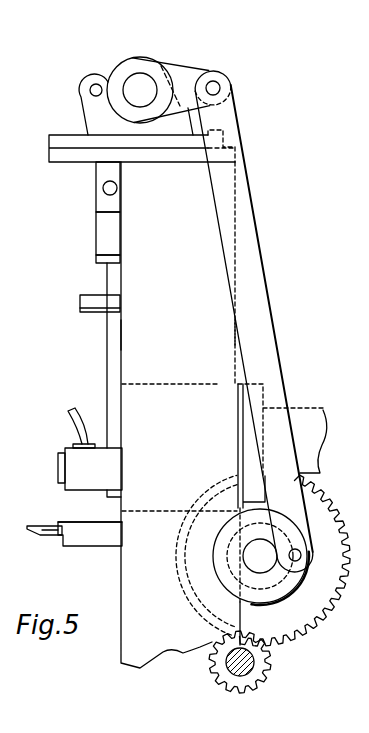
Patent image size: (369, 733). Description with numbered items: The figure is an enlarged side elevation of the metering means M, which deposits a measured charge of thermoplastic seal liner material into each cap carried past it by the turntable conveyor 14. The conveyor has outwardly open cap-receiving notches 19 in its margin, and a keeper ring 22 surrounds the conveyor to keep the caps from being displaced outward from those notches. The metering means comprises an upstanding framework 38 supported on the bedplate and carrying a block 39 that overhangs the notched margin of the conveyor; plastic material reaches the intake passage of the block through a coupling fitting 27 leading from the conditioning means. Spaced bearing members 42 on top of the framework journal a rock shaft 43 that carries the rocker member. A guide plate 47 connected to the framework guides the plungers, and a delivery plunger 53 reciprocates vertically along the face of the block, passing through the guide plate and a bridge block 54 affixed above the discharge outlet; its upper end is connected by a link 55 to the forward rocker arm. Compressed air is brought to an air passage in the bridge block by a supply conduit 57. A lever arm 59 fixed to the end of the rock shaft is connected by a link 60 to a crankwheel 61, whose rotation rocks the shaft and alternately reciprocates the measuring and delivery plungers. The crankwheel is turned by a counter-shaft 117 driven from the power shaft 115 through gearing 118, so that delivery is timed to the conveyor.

The turntable conveyor 14 is at (43, 538).
The cap-receiving notches 19 is at (52, 522).
The keeper ring 22 is at (88, 542).
The coupling fitting 27 is at (309, 411).
The framework 38 is at (217, 333).
The block 39 is at (220, 384).
The bearing members 42 is at (102, 115).
The rock shaft 43 is at (147, 85).
The guide plate 47 is at (92, 298).
The delivery plunger 53 is at (107, 363).
The bridge block 54 is at (73, 457).
The link 55 is at (98, 173).
The supply conduit 57 is at (83, 410).
The lever arm 59 is at (190, 80).
The link 60 is at (252, 253).
The crankwheel 61 is at (227, 583).
The power shaft 115 is at (226, 666).
The counter-shaft 117 is at (250, 552).
The gearing 118 is at (303, 631).
The metering means M is at (112, 338).